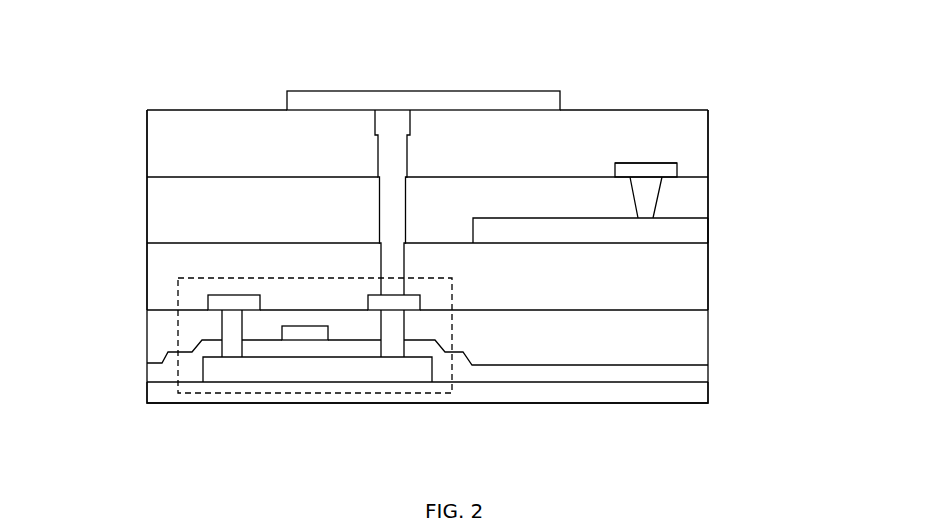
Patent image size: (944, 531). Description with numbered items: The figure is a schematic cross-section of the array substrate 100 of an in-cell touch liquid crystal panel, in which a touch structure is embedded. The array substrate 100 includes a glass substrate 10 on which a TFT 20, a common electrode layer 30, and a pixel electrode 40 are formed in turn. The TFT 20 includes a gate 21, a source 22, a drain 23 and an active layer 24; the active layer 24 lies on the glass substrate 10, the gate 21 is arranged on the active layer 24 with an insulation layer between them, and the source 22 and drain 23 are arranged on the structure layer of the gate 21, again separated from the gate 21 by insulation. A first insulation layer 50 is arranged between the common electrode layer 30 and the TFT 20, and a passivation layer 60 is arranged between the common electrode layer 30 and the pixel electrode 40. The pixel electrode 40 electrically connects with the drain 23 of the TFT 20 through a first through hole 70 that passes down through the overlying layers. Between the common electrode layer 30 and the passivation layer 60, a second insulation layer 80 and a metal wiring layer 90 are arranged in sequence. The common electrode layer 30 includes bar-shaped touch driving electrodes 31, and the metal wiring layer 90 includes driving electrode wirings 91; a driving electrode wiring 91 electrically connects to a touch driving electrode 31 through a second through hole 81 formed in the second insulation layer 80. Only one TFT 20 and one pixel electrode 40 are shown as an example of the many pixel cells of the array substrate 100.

The array substrate 100 is at (195, 77).
The glass substrate 10 is at (697, 392).
The TFT 20 is at (178, 333).
The gate 21 is at (302, 330).
The source 22 is at (218, 302).
The drain 23 is at (412, 302).
The active layer 24 is at (349, 365).
The common electrode layer 30 is at (711, 230).
The touch driving electrode 31 is at (697, 230).
The pixel electrode 40 is at (331, 108).
The first insulation layer 50 is at (156, 257).
The passivation layer 60 is at (155, 152).
The first through hole 70 is at (387, 163).
The second insulation layer 80 is at (157, 212).
The second through hole 81 is at (647, 193).
The metal wiring layer 90 is at (683, 168).
The driving electrode wiring 91 is at (640, 165).